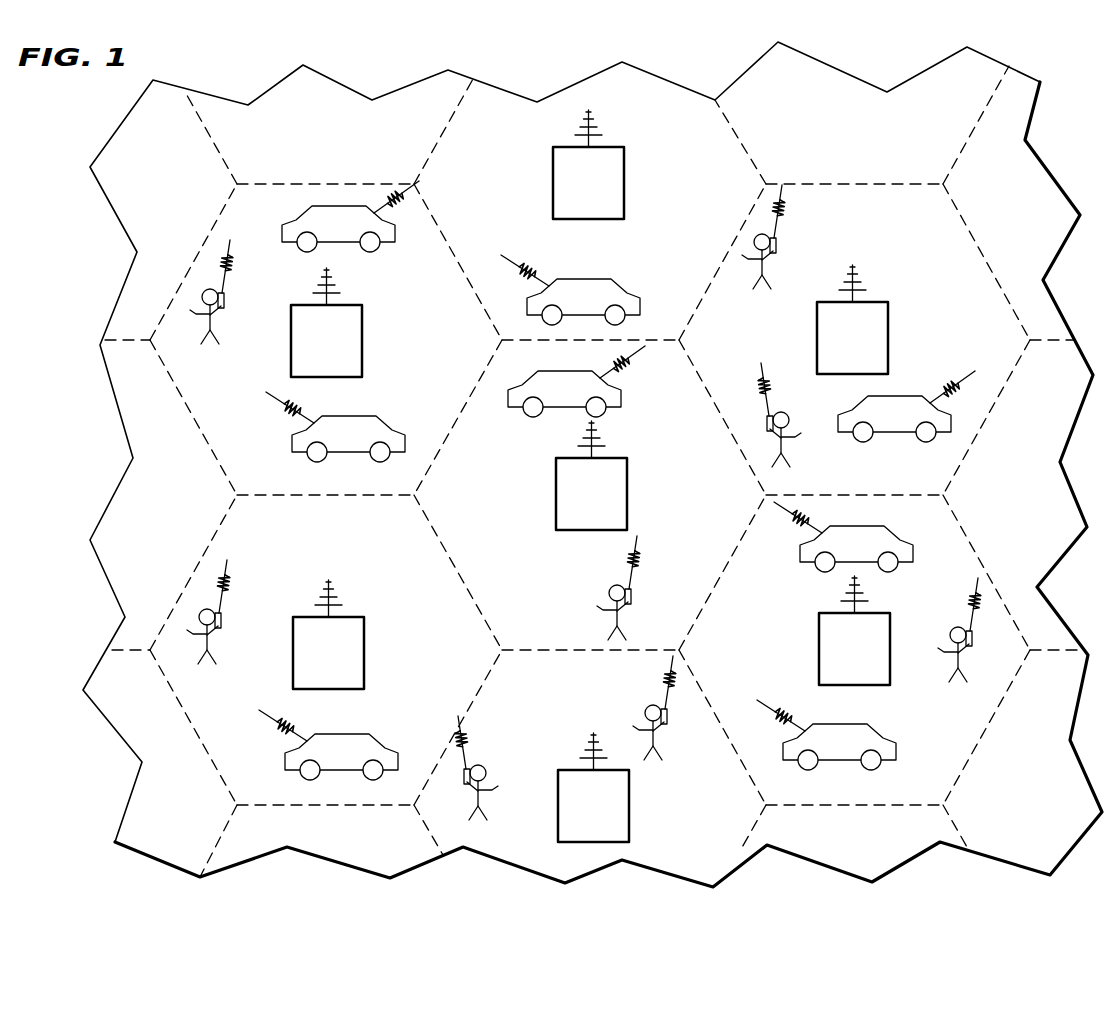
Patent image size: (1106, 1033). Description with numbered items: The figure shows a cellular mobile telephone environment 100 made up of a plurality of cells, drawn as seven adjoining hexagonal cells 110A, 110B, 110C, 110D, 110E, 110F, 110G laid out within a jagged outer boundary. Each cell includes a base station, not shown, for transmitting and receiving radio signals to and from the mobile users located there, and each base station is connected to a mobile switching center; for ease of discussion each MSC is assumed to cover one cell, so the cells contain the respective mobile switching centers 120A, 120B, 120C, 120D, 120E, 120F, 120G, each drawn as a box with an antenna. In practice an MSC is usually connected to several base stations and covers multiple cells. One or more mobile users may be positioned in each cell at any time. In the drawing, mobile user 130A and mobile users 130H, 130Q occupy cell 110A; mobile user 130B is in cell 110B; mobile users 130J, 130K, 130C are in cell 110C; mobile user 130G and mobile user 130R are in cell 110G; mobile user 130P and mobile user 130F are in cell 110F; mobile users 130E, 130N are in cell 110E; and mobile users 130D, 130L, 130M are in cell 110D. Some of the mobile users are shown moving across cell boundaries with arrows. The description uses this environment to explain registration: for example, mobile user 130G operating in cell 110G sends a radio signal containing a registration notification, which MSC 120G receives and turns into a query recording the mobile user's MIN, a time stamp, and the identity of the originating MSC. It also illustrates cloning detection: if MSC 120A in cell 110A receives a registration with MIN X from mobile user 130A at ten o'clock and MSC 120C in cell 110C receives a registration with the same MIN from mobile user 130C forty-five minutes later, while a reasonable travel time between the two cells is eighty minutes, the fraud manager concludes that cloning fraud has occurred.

The cellular mobile telephone environment 100 is at (1038, 738).
The cell 110A is at (455, 356).
The cell 110B is at (500, 201).
The cell 110C is at (961, 276).
The cell 110D is at (767, 664).
The cell 110E is at (712, 822).
The cell 110F is at (447, 605).
The cell 110G is at (503, 511).
The mobile switching center 120A is at (326, 322).
The mobile switching center 120B is at (588, 164).
The mobile switching center 120C is at (852, 319).
The mobile switching center 120D is at (854, 630).
The mobile switching center 120E is at (593, 787).
The mobile switching center 120F is at (328, 634).
The mobile switching center 120G is at (591, 475).
The mobile user 130A is at (206, 356).
The mobile user 130B is at (570, 290).
The mobile user 130C is at (906, 406).
The mobile user 130D is at (843, 537).
The mobile user 130E is at (603, 712).
The mobile user 130F is at (328, 745).
The mobile user 130G is at (576, 381).
The mobile user 130H is at (350, 216).
The mobile user 130J is at (800, 221).
The mobile user 130K is at (748, 415).
The mobile user 130L is at (962, 614).
The mobile user 130M is at (826, 735).
The mobile user 130N is at (502, 777).
The mobile user 130P is at (241, 545).
The mobile user 130Q is at (335, 427).
The mobile user 130R is at (578, 612).